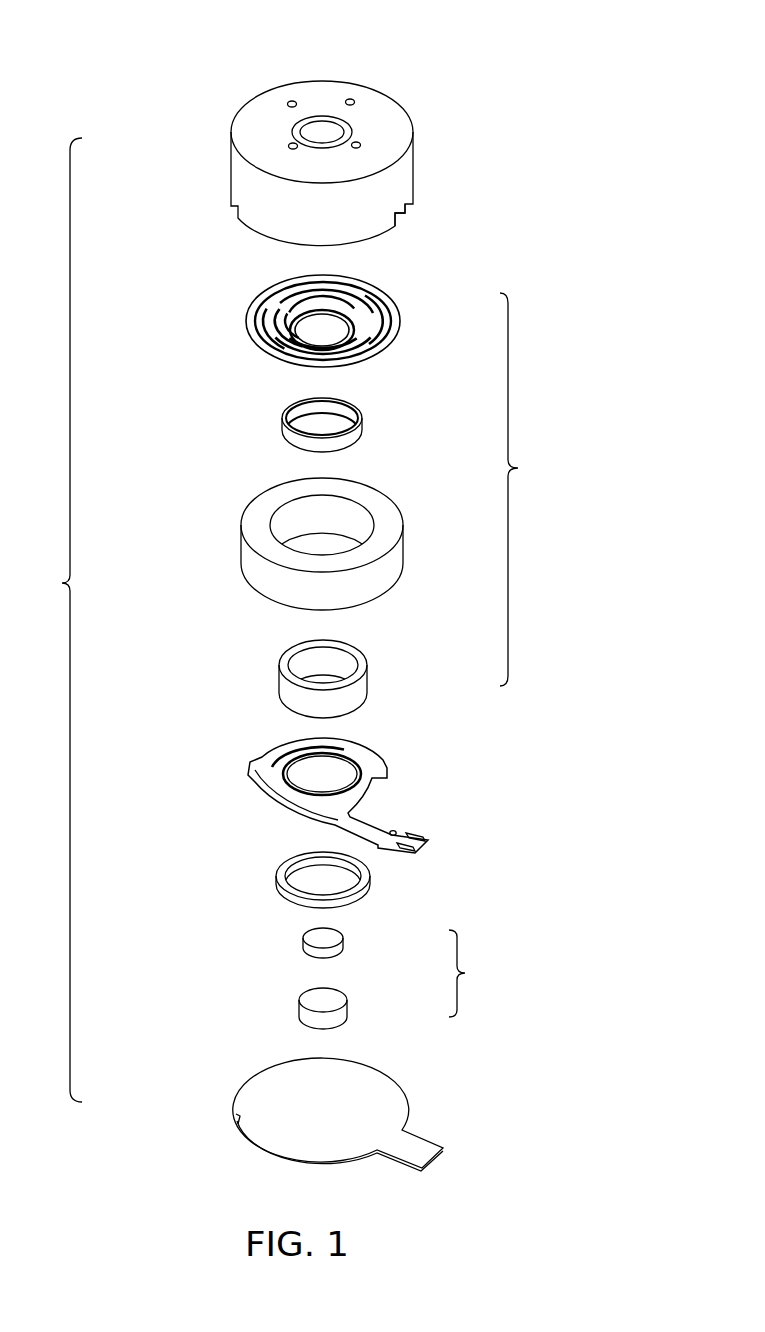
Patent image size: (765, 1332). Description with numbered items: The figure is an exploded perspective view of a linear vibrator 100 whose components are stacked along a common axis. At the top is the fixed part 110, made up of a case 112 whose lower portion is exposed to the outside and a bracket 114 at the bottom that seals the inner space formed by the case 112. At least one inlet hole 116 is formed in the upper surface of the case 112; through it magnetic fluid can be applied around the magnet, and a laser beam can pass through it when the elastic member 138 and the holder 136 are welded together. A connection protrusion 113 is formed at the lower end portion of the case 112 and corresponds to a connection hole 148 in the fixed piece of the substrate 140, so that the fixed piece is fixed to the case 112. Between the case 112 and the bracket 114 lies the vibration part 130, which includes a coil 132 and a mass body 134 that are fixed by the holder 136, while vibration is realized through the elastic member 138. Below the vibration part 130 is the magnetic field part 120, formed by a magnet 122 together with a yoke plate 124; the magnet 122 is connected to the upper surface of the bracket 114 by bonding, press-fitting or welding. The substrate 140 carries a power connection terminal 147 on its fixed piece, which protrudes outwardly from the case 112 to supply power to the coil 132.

The linear vibrator 100 is at (117, 26).
The fixed part 110 is at (51, 620).
The case 112 is at (238, 164).
The connection protrusion 113 is at (398, 223).
The bracket 114 is at (242, 1108).
The inlet hole 116 is at (350, 100).
The magnetic field part 120 is at (479, 973).
The magnet 122 is at (347, 1010).
The yoke plate 124 is at (344, 946).
The vibration part 130 is at (532, 489).
The coil 132 is at (365, 683).
The mass body 134 is at (404, 548).
The holder 136 is at (362, 415).
The elastic member 138 is at (398, 306).
The substrate 140 is at (385, 768).
The power connection terminal 147 is at (423, 847).
The connection hole 148 is at (396, 832).